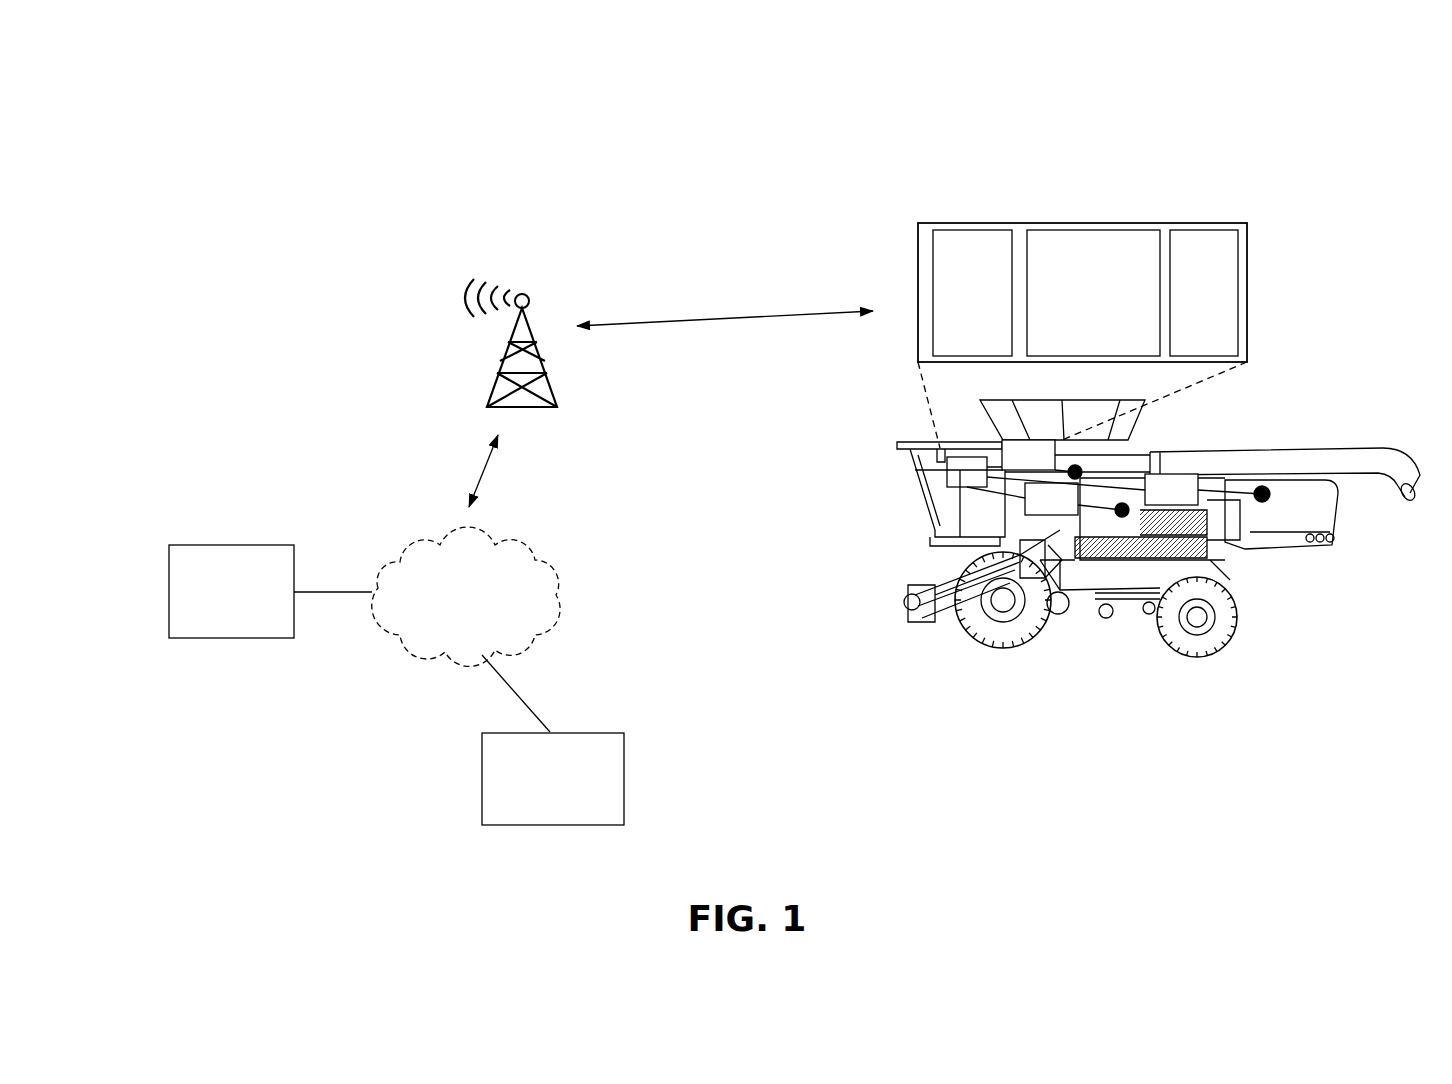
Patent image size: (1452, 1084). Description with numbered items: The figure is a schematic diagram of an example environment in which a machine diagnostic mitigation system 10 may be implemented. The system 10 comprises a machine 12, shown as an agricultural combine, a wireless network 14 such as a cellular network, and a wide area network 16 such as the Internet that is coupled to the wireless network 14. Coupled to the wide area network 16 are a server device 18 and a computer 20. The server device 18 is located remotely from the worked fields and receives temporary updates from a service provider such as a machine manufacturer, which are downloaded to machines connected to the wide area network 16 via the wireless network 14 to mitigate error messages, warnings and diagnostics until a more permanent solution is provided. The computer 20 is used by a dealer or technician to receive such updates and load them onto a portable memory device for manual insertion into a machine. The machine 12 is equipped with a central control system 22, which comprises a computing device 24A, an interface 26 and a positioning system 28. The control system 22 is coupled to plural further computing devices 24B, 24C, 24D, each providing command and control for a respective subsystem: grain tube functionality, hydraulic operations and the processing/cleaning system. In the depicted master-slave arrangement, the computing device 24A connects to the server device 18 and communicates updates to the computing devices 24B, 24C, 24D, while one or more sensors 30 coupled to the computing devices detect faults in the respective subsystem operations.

The machine diagnostic mitigation system 10 is at (270, 144).
The machine 12 is at (1288, 548).
The wireless network 14 is at (554, 268).
The wide area network 16 is at (466, 596).
The server device 18 is at (231, 591).
The computer 20 is at (553, 779).
The central control system 22 is at (1247, 250).
The computing device 24A is at (972, 293).
The computing device 24B is at (1034, 459).
The computing device 24C is at (1128, 489).
The computing device 24D is at (1048, 500).
The interface 26 is at (1093, 293).
The positioning system 28 is at (1204, 293).
The sensor 30 is at (1263, 492).